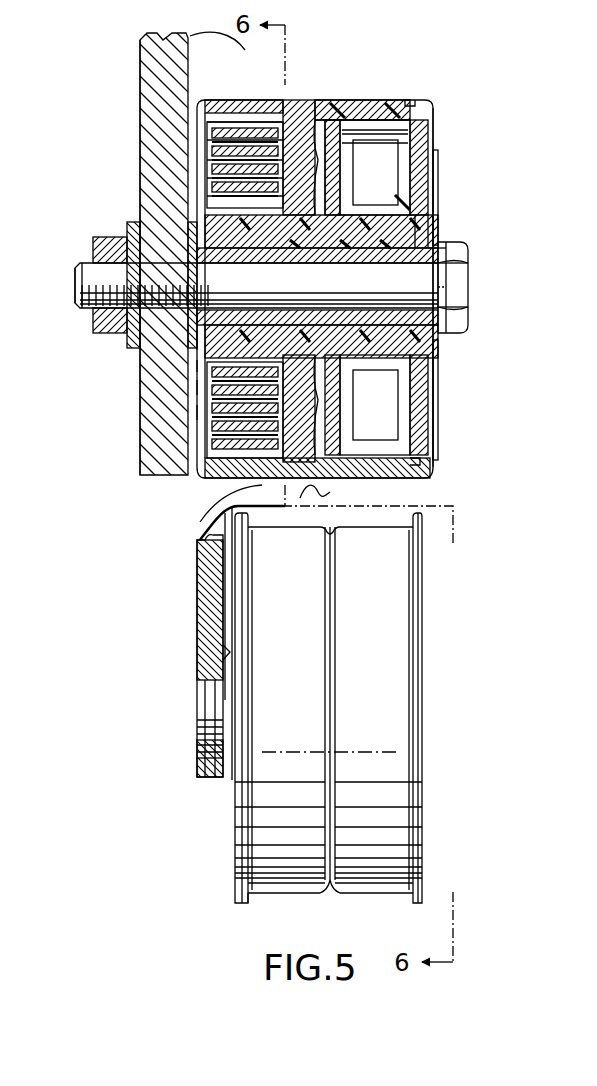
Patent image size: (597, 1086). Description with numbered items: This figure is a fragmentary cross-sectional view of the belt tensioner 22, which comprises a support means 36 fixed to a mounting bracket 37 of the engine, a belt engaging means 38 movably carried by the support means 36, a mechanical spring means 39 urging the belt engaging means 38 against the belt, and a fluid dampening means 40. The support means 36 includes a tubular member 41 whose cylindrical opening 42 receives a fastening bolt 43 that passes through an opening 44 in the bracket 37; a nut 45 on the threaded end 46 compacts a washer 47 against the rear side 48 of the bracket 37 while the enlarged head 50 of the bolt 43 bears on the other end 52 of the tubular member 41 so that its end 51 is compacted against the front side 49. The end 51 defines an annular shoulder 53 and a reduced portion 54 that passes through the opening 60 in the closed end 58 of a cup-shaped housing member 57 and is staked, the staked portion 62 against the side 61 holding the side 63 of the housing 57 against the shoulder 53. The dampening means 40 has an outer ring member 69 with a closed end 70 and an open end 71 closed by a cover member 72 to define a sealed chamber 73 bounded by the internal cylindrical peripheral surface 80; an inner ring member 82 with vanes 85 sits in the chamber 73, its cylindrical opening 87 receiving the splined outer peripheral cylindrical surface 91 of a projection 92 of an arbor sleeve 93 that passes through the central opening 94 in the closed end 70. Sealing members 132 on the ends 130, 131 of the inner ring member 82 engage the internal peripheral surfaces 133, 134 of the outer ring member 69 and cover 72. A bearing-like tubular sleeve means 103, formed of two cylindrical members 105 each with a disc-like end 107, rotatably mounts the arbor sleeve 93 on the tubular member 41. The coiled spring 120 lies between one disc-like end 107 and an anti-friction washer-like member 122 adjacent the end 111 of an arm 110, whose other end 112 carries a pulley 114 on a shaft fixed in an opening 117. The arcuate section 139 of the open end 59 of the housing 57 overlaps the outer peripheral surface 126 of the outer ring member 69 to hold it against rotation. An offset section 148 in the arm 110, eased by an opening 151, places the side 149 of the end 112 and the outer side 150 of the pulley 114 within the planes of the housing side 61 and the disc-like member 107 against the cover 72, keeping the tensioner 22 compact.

The belt tensioner 22 is at (475, 107).
The support means 36 is at (193, 400).
The mounting bracket 37 is at (150, 68).
The belt engaging means 38 is at (388, 505).
The mechanical spring means 39 is at (243, 112).
The fluid dampening means 40 is at (422, 93).
The tubular member 41 is at (427, 257).
The cylindrical opening 42 is at (413, 268).
The fastening bolt 43 is at (427, 287).
The opening 44 is at (113, 253).
The nut 45 is at (97, 318).
The threaded end 46 is at (83, 279).
The washer 47 is at (130, 337).
The rear side 48 is at (140, 50).
The front side 49 is at (311, 255).
The enlarged head 50 is at (455, 320).
The end 51 is at (228, 240).
The other end 52 is at (438, 313).
The annular shoulder 53 is at (187, 343).
The reduced portion 54 is at (215, 195).
The cup-shaped housing member 57 is at (197, 473).
The closed end 58 is at (197, 387).
The open end 59 is at (331, 492).
The opening 60 is at (193, 310).
The side 61 is at (205, 145).
The staked portion 62 is at (187, 320).
The side 63 is at (240, 110).
The outer ring member 69 is at (365, 107).
The closed end 70 is at (318, 135).
The open end 71 is at (433, 460).
The cover member 72 is at (437, 135).
The sealed chamber 73 is at (400, 392).
The internal cylindrical peripheral surface 80 is at (427, 430).
The inner ring member 82 is at (380, 217).
The vanes 85 is at (438, 157).
The cylindrical opening 87 is at (373, 236).
The outer peripheral cylindrical surface 91 is at (378, 343).
The projection 92 is at (433, 345).
The arbor sleeve 93 is at (317, 362).
The central opening 94 is at (400, 187).
The tubular sleeve means 103 is at (212, 175).
The cylindrical members 105 is at (197, 367).
The disc-like end 107 is at (197, 413).
The arm 110 is at (197, 600).
The end 111 is at (293, 130).
The other end 112 is at (205, 763).
The pulley 114 is at (397, 695).
The opening 117 is at (223, 648).
The coiled spring 120 is at (215, 133).
The washer-like member 122 is at (300, 115).
The outer peripheral surface 126 is at (380, 107).
The end 130 is at (427, 236).
The end 131 is at (313, 255).
The sealing members 132 is at (420, 353).
The internal peripheral surface 133 is at (302, 222).
The internal peripheral surface 134 is at (427, 230).
The arcuate section 139 is at (372, 103).
The offset section 148 is at (257, 487).
The side 149 is at (197, 623).
The outer side 150 is at (420, 772).
The opening 151 is at (203, 530).